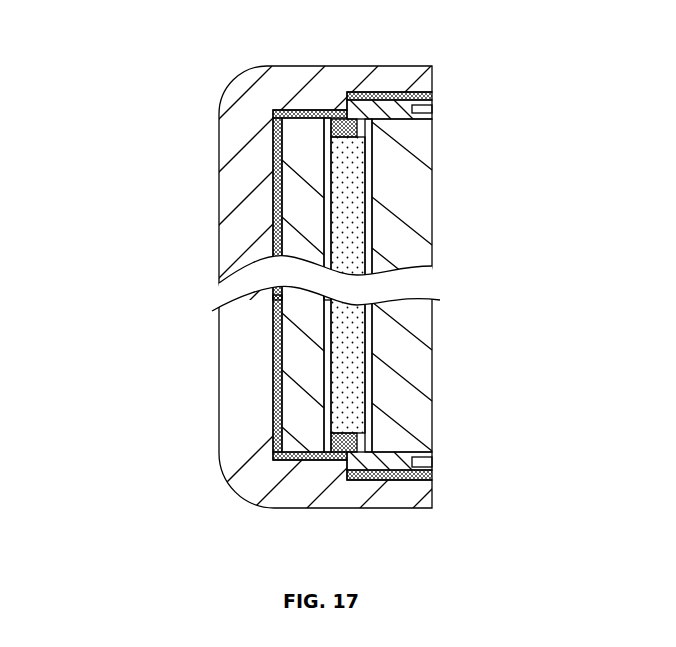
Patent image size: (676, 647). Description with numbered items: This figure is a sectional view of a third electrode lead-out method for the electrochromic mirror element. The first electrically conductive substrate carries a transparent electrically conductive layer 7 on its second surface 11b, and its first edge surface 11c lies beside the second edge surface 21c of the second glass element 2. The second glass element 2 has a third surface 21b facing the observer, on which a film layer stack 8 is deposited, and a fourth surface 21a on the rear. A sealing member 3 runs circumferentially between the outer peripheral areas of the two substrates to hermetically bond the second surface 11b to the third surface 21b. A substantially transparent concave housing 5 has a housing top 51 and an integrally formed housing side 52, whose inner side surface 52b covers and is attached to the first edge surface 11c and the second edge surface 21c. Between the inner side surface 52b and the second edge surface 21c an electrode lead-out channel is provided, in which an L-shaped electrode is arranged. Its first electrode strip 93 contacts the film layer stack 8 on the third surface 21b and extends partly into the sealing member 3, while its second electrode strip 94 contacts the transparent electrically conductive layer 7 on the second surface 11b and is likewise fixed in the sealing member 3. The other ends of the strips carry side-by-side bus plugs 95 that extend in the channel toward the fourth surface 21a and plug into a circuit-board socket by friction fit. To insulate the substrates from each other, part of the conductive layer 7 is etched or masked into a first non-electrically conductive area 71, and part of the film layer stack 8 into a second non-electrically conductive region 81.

The second glass element 2 is at (403, 372).
The fourth surface 21a is at (432, 402).
The third surface 21b is at (367, 326).
The second edge surface 21c is at (432, 135).
The sealing member 3 is at (247, 493).
The concave housing 5 is at (108, 162).
The housing top 51 is at (240, 237).
The housing side 52 is at (320, 95).
The inner side surface 52b is at (392, 95).
The transparent electrically conductive layer 7 is at (284, 338).
The first non-electrically conductive area 71 is at (222, 395).
The film layer stack 8 is at (368, 262).
The second non-electrically conductive region 81 is at (365, 138).
The first electrode strip 93 is at (413, 451).
The second electrode strip 94 is at (432, 93).
The bus plug 95 is at (432, 462).
The second surface 11b is at (325, 393).
The first edge surface 11c is at (325, 146).